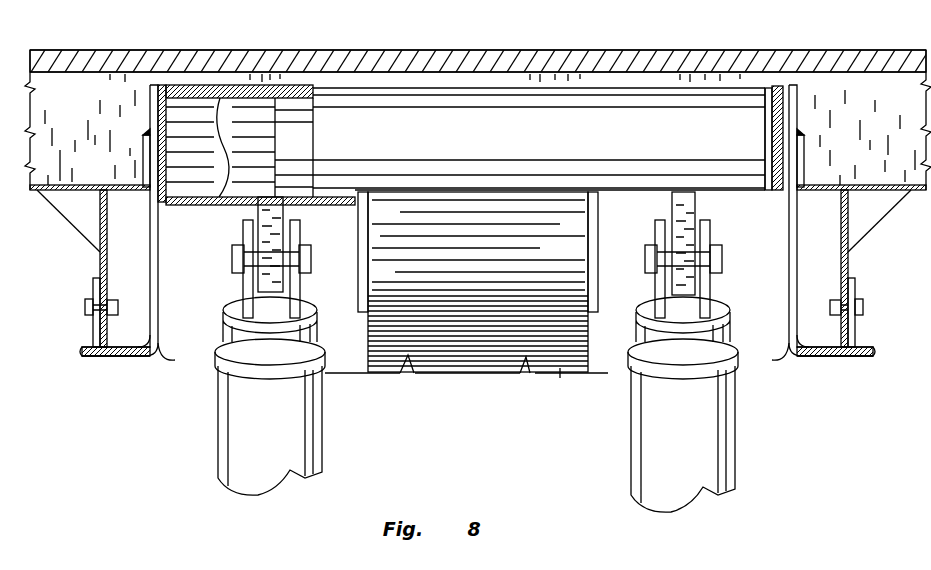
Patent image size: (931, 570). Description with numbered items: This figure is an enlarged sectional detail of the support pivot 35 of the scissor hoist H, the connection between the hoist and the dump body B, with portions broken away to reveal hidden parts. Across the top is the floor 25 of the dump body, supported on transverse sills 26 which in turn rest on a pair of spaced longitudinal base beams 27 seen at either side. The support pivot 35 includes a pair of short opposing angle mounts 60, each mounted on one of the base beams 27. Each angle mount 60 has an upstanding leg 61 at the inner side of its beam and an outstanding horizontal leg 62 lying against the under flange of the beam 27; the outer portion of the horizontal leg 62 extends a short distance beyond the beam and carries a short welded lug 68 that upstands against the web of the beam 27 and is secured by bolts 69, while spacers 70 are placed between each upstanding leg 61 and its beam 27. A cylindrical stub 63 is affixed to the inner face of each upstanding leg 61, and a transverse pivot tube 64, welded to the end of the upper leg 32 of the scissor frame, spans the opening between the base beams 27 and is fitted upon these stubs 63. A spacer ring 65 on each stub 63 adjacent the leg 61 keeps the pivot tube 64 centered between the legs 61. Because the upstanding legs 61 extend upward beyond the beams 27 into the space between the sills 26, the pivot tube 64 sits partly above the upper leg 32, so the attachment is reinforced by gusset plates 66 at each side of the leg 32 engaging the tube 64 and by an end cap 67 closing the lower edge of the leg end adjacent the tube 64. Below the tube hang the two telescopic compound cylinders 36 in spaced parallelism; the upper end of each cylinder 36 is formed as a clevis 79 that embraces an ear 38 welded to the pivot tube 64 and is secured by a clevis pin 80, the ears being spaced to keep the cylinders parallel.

The dump body B is at (812, 49).
The hoist H is at (168, 428).
The floor 25 is at (167, 55).
The transverse sills 26 is at (47, 190).
The longitudinal base beams 27 is at (100, 228).
The upper leg 32 is at (497, 375).
The support pivot 35 is at (507, 93).
The telescopic compound cylinders 36 is at (258, 448).
The ear 38 is at (262, 232).
The angle mounts 60 is at (168, 359).
The upstanding leg 61 is at (150, 123).
The horizontal leg 62 is at (113, 357).
The cylindrical stub 63 is at (213, 170).
The transverse pivot tube 64 is at (350, 113).
The spacer ring 65 is at (173, 85).
The gusset plates 66 is at (358, 243).
The end cap 67 is at (440, 208).
The lug 68 is at (93, 285).
The bolts 69 is at (85, 308).
The spacers 70 is at (143, 160).
The clevis 79 is at (248, 283).
The clevis pin 80 is at (232, 260).